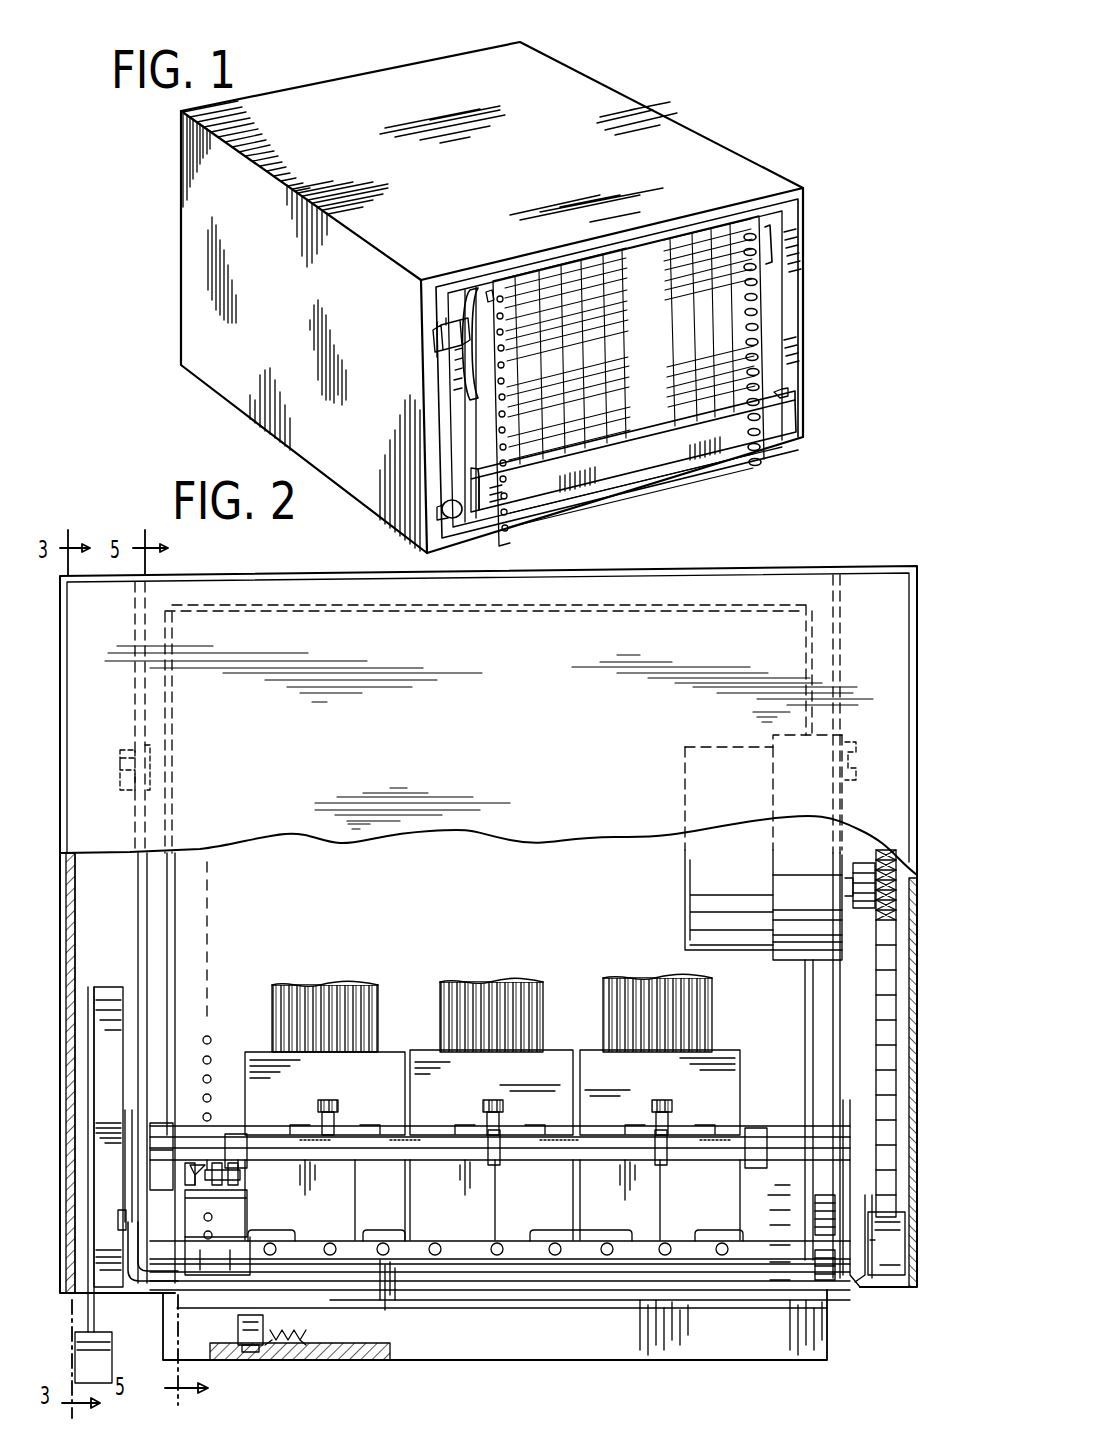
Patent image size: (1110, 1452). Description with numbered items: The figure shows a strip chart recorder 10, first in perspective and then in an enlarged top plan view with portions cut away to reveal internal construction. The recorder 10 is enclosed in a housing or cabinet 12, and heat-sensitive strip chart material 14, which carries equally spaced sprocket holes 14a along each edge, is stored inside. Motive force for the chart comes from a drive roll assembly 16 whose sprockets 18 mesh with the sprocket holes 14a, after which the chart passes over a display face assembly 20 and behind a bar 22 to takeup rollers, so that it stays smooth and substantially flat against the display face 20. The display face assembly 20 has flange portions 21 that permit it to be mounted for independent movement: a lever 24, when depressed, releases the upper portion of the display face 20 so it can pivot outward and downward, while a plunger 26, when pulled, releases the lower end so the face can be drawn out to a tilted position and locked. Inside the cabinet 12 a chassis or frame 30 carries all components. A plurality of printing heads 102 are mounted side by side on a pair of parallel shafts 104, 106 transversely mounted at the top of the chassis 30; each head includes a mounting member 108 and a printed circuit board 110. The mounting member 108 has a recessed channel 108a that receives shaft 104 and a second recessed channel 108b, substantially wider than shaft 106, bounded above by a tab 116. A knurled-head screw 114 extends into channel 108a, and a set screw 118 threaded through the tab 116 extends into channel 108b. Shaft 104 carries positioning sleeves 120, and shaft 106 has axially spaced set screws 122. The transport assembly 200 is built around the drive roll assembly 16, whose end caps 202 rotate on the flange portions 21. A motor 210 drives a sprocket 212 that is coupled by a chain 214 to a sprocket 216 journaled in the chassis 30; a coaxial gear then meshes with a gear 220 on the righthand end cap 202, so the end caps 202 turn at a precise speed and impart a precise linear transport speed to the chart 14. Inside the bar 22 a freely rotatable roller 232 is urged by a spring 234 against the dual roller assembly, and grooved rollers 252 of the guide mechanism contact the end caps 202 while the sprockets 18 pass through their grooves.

In FIG. 1, the strip chart recorder 10 is at (709, 92).
In FIG. 2, the strip chart recorder 10 is at (524, 1376).
In FIG. 1, the housing or cabinet 12 is at (742, 165).
In FIG. 2, the housing or cabinet 12 is at (905, 745).
In FIG. 1, the strip chart material 14 is at (656, 360).
In FIG. 1, the sprocket holes 14a is at (760, 308).
In FIG. 1, the drive roll assembly 16 is at (478, 292).
In FIG. 2, the drive roll assembly 16 is at (232, 1234).
In FIG. 1, the sprockets 18 is at (498, 294).
In FIG. 2, the sprockets 18 is at (792, 1300).
In FIG. 1, the display face assembly 20 is at (483, 447).
In FIG. 2, the display face assembly 20 is at (590, 1288).
In FIG. 2, the flange portions 21 is at (125, 1232).
In FIG. 1, the bar 22 is at (798, 410).
In FIG. 2, the bar 22 is at (685, 1348).
In FIG. 1, the lever 24 is at (440, 347).
In FIG. 2, the lever 24 is at (86, 1200).
In FIG. 1, the plunger 26 is at (441, 511).
In FIG. 1, the chassis or frame 30 is at (792, 370).
In FIG. 2, the chassis or frame 30 is at (140, 952).
In FIG. 2, the printing heads 102 is at (261, 1042).
In FIG. 2, the shaft 104 is at (212, 1148).
In FIG. 2, the shaft 106 is at (463, 1248).
In FIG. 2, the mounting member 108 is at (352, 1210).
In FIG. 2, the recessed channel 108a is at (465, 1147).
In FIG. 2, the second recessed channel 108b is at (262, 1232).
In FIG. 2, the printed circuit board 110 is at (337, 1089).
In FIG. 2, the screw 114 is at (493, 1112).
In FIG. 2, the tab 116 is at (517, 1258).
In FIG. 2, the set screw 118 is at (362, 992).
In FIG. 2, the positioning sleeves 120 is at (235, 1150).
In FIG. 2, the set screw 122 is at (352, 1247).
In FIG. 2, the transport assembly 200 is at (874, 1305).
In FIG. 2, the end caps 202 is at (240, 1202).
In FIG. 2, the motor 210 is at (748, 870).
In FIG. 2, the sprocket 212 is at (862, 875).
In FIG. 2, the chain 214 is at (897, 970).
In FIG. 2, the sprocket 216 is at (893, 1275).
In FIG. 2, the gear 220 is at (828, 1280).
In FIG. 2, the roller 232 is at (252, 1350).
In FIG. 2, the spring 234 is at (300, 1345).
In FIG. 2, the roller 252 is at (765, 1172).